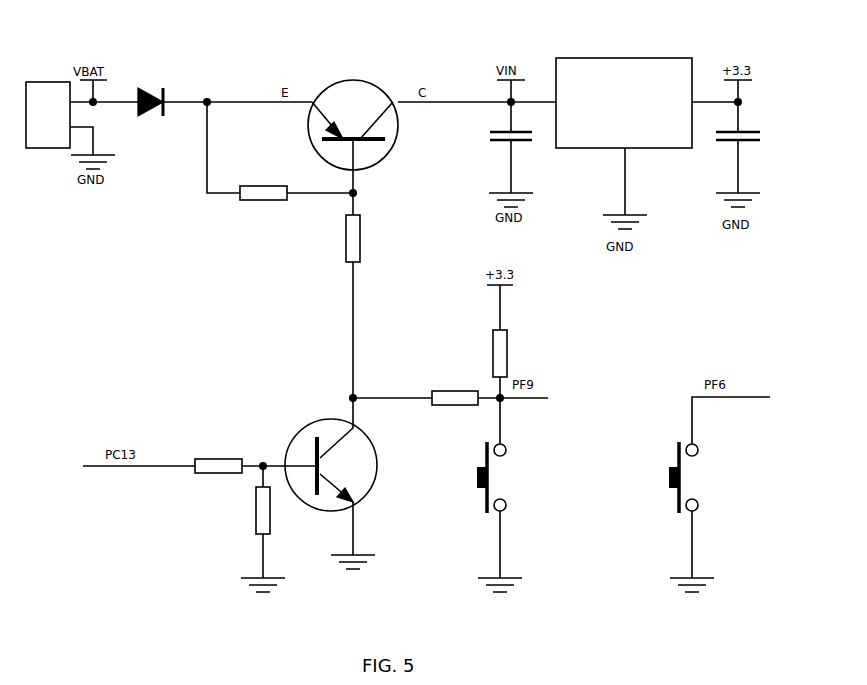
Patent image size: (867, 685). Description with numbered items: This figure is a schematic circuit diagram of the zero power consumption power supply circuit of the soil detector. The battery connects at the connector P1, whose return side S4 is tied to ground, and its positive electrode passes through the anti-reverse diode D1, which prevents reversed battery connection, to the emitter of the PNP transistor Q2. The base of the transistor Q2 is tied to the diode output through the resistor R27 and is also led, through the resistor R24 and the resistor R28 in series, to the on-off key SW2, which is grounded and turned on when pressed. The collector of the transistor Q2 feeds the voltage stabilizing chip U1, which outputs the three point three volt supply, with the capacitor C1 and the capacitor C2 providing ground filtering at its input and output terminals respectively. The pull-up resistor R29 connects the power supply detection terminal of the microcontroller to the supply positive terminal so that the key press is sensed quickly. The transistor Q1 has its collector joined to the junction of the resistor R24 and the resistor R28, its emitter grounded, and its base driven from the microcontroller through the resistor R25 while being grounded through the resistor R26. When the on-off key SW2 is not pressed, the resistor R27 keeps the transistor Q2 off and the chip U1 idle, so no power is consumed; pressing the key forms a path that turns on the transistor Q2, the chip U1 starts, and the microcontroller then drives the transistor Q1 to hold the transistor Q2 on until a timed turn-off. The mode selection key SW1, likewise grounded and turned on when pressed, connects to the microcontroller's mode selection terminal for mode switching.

The battery connector P1 is at (48, 107).
The ground connection of connector P1 S4 is at (98, 148).
The anti-reverse diode D1 is at (152, 84).
The transistor Q2 is at (379, 136).
The resistor R27 is at (280, 160).
The resistor R24 is at (368, 295).
The resistor R28 is at (450, 400).
The pull-up resistor R29 is at (511, 341).
The on-off key SW2 is at (505, 495).
The mode selection key SW1 is at (719, 494).
The transistor Q1 is at (339, 483).
The resistor R25 is at (173, 469).
The resistor R26 is at (251, 529).
The capacitor C1 is at (541, 154).
The voltage stabilizing chip U1 is at (624, 134).
The capacitor C2 is at (769, 154).